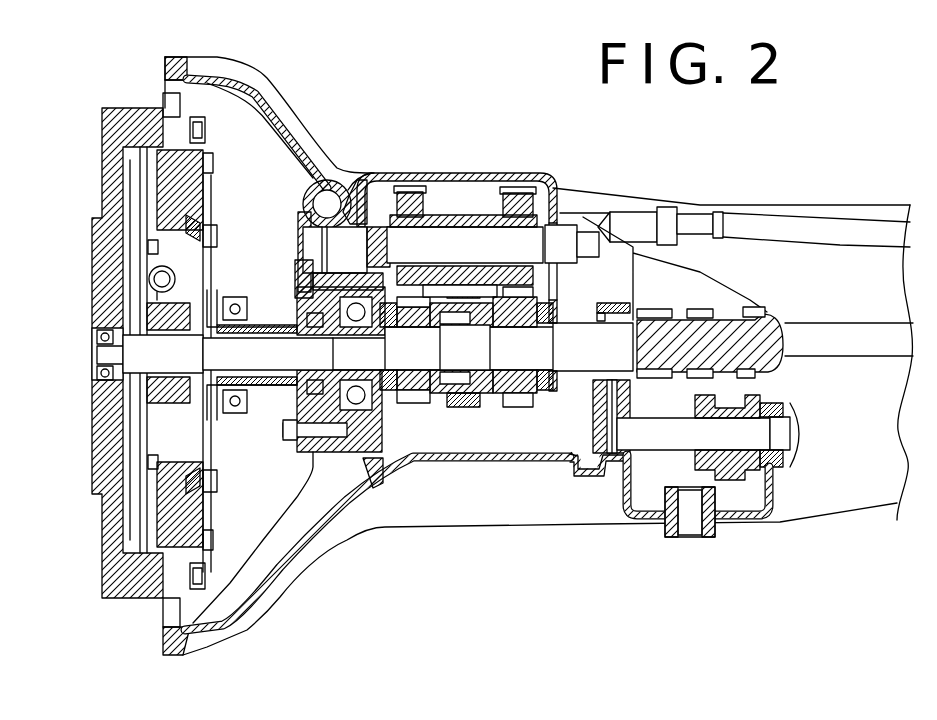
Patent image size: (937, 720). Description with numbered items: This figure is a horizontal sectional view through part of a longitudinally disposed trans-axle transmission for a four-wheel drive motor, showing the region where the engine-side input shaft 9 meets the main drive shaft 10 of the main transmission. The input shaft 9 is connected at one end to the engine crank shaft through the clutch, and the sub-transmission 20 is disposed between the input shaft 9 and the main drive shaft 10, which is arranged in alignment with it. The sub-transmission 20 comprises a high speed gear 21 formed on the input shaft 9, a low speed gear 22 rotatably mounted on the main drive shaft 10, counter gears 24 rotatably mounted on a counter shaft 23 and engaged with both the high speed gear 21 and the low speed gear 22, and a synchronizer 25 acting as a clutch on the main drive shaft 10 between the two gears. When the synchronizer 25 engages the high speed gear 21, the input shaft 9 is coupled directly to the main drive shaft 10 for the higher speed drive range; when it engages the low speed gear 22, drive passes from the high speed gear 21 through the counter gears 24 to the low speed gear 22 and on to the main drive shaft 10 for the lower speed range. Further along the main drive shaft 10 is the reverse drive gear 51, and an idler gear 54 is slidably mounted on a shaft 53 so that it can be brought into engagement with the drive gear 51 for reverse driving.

The input shaft 9 is at (347, 364).
The main drive shaft 10 is at (605, 359).
The sub-transmission 20 is at (471, 204).
The high speed gear 21 is at (416, 405).
The low speed gear 22 is at (540, 406).
The counter shaft 23 is at (373, 260).
The counter gear 24 is at (411, 188).
The synchronizer 25 is at (465, 412).
The drive gear 51 is at (690, 312).
The shaft 53 is at (668, 432).
The idler gear 54 is at (752, 500).